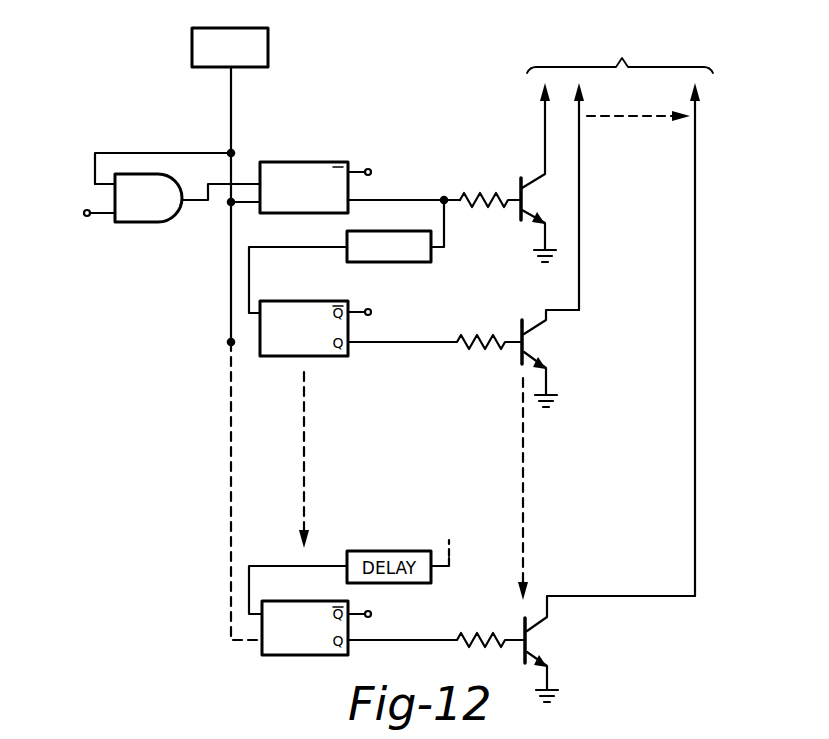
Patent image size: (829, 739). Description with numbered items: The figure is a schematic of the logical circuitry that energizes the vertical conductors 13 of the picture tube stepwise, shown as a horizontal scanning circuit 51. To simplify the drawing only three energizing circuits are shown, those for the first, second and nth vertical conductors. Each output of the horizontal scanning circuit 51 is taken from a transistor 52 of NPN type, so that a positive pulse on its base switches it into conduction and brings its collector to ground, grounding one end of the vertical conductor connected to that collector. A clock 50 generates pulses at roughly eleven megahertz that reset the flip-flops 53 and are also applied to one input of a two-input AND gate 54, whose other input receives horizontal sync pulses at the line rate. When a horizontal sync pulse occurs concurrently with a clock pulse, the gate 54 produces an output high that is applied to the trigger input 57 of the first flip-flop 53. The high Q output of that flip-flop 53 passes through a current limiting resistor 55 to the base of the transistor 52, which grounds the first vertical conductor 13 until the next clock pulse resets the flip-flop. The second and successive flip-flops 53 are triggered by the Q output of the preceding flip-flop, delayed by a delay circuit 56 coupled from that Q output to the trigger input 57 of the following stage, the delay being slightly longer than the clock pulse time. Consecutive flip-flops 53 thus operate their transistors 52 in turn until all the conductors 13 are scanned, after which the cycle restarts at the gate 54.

The clock 50 is at (262, 67).
The horizontal scanning circuit 51 is at (728, 309).
The transistor 52 is at (520, 178).
The flip-flop 53 is at (340, 162).
The two-input AND gate 54 is at (148, 223).
The current limiting resistor 55 is at (478, 190).
The delay circuit 56 is at (413, 262).
The trigger input 57 is at (243, 184).
The vertical conductors 13 is at (620, 162).